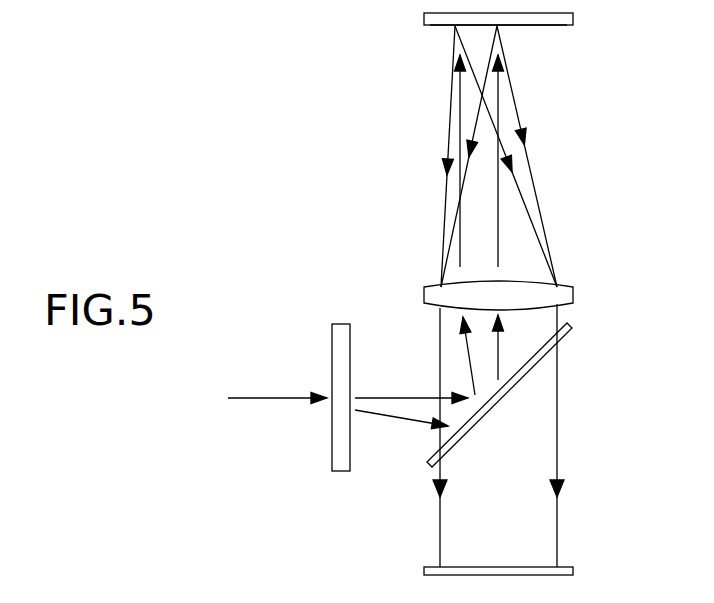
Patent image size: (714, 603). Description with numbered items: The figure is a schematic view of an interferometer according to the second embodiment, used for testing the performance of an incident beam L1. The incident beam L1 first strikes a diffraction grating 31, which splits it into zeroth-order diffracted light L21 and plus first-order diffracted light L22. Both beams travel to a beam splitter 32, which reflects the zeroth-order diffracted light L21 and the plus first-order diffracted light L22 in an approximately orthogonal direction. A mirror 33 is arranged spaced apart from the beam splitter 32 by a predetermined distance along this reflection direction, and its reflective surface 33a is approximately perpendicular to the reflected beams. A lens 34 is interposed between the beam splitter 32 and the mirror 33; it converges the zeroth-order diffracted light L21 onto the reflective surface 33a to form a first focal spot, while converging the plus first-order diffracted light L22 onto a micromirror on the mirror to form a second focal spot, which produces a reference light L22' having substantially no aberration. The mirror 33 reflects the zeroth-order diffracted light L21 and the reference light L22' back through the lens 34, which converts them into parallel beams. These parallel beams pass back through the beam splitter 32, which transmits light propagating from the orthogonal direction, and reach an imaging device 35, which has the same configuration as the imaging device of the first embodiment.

The diffraction grating 31 is at (338, 323).
The beam splitter 32 is at (571, 327).
The mirror 33 is at (573, 18).
The reflective surface 33a is at (528, 25).
The lens 34 is at (573, 295).
The imaging device 35 is at (573, 568).
The incident beam L1 is at (277, 388).
The zeroth-order diffracted light L21 is at (460, 296).
The plus first-order diffracted light L22 is at (435, 296).
The reference light L22' is at (425, 156).